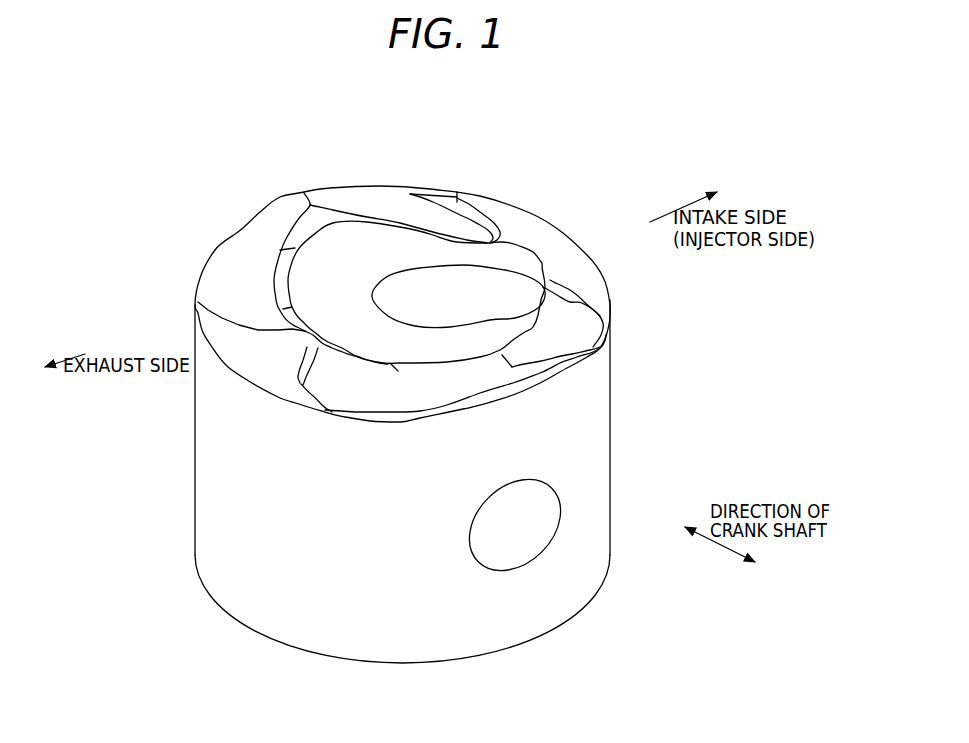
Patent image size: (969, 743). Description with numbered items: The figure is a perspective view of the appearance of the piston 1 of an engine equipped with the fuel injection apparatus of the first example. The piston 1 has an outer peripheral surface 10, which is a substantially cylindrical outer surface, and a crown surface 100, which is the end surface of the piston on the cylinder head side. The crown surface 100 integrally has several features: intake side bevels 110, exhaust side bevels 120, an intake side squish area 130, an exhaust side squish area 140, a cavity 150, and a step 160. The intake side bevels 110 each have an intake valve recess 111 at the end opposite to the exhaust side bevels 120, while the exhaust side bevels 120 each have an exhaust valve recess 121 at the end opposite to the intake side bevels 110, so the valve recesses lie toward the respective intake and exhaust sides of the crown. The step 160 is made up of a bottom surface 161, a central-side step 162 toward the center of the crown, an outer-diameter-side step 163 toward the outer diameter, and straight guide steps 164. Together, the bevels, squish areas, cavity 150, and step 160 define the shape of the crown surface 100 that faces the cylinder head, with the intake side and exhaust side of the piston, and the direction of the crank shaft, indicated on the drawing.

The piston 1 is at (220, 175).
The crown surface 100 is at (272, 175).
The outer peripheral surface 10 is at (198, 498).
The intake side bevels 110 is at (533, 327).
The intake valve recess 111 is at (582, 303).
The exhaust side bevels 120 is at (372, 383).
The exhaust valve recess 121 is at (307, 362).
The intake side squish area 130 is at (540, 232).
The exhaust side squish area 140 is at (245, 362).
The cavity 150 is at (338, 302).
The step 160 is at (507, 253).
The bottom surface 161 is at (440, 302).
The central-side step 162 is at (403, 320).
The outer-diameter-side step 163 is at (542, 263).
The straight guide steps 164 is at (488, 317).